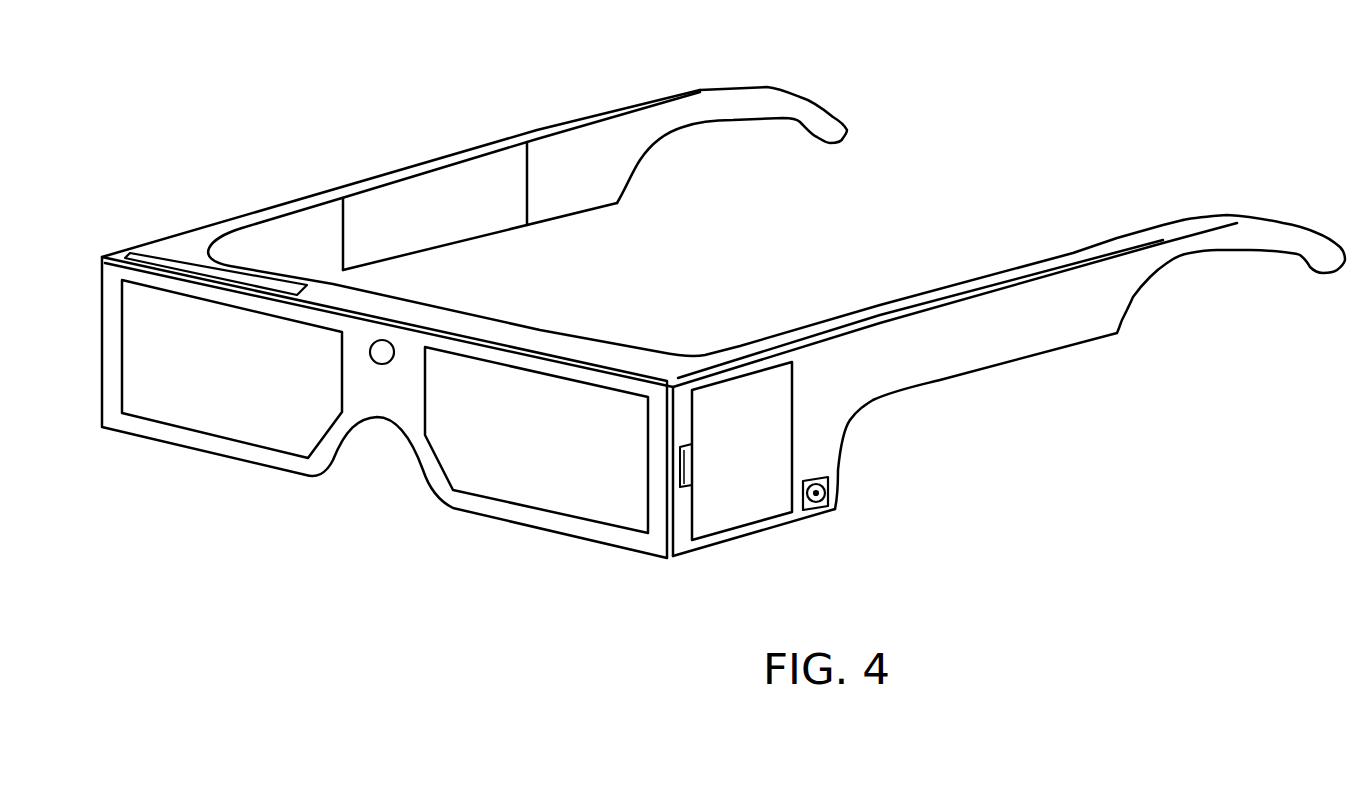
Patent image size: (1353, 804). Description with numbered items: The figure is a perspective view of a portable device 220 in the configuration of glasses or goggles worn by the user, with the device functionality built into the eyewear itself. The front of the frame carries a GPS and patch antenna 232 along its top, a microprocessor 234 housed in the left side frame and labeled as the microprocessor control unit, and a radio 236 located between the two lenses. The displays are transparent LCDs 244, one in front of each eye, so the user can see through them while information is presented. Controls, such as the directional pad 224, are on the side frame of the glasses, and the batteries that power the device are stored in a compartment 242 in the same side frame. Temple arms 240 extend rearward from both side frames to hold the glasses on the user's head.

The eyewear / glasses frame 220 is at (293, 566).
The connector port 224 is at (827, 493).
The slot / aperture on top of frame 232 is at (145, 250).
The microprocessor control unit 234 is at (485, 163).
The sensor / button opening 236 is at (380, 364).
The temple arm 240 is at (708, 95).
The side panel / battery compartment 242 is at (745, 512).
The lens 244 is at (215, 428).